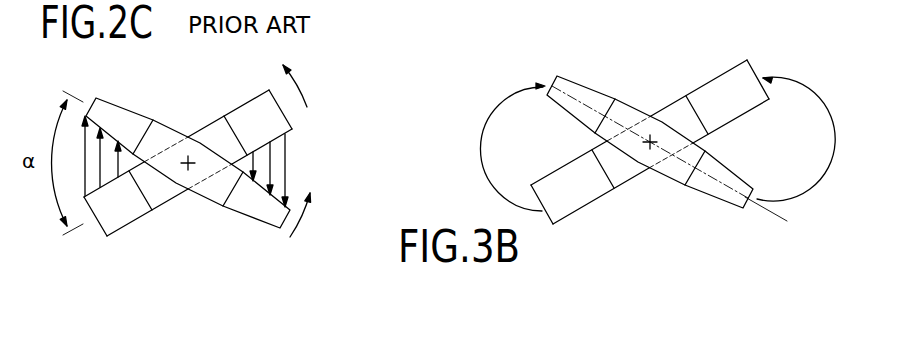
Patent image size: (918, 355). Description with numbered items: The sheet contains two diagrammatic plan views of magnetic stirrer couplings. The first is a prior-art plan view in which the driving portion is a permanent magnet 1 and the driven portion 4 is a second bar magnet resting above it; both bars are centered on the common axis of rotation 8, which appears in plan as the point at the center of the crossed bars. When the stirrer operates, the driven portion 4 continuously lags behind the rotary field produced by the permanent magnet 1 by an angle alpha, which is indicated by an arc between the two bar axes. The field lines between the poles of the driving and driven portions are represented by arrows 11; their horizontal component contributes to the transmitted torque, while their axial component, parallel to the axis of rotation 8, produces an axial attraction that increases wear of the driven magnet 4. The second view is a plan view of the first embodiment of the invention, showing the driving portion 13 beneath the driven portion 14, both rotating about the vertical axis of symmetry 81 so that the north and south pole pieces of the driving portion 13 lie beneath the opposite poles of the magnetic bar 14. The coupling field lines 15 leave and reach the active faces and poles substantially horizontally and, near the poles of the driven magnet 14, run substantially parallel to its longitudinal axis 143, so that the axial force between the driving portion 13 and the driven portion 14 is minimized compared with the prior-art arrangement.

In FIG. 2C, the permanent magnet 1 is at (143, 212).
In FIG. 2C, the driven portion 4 is at (132, 107).
In FIG. 2C, the axis of rotation 8 is at (193, 158).
In FIG. 2C, the field lines arrows 11 is at (82, 171).
In FIG. 3B, the driving portion 13 is at (604, 194).
In FIG. 3B, the driven portion 14 is at (596, 83).
In FIG. 3B, the field lines 15 is at (518, 88).
In FIG. 3B, the vertical axis of symmetry 81 is at (652, 140).
In FIG. 3B, the longitudinal axis of the driven magnet 143 is at (763, 212).